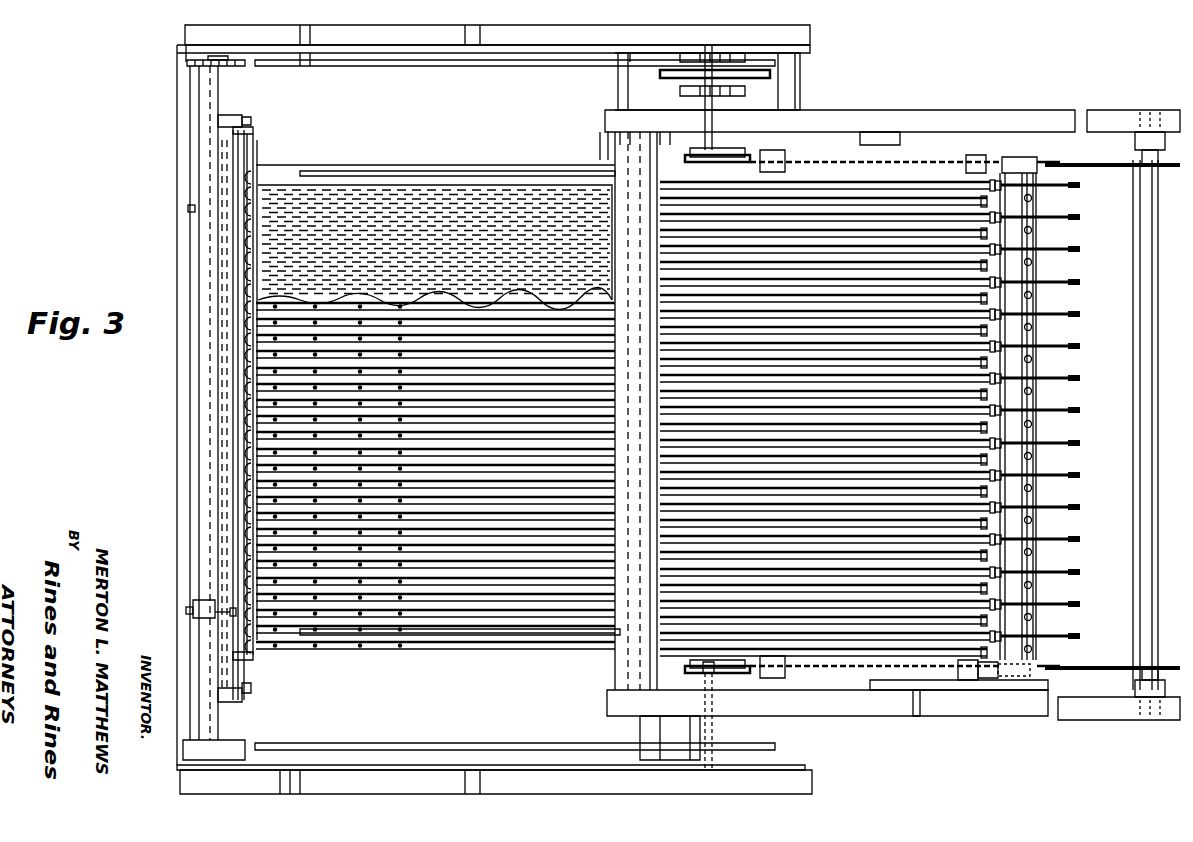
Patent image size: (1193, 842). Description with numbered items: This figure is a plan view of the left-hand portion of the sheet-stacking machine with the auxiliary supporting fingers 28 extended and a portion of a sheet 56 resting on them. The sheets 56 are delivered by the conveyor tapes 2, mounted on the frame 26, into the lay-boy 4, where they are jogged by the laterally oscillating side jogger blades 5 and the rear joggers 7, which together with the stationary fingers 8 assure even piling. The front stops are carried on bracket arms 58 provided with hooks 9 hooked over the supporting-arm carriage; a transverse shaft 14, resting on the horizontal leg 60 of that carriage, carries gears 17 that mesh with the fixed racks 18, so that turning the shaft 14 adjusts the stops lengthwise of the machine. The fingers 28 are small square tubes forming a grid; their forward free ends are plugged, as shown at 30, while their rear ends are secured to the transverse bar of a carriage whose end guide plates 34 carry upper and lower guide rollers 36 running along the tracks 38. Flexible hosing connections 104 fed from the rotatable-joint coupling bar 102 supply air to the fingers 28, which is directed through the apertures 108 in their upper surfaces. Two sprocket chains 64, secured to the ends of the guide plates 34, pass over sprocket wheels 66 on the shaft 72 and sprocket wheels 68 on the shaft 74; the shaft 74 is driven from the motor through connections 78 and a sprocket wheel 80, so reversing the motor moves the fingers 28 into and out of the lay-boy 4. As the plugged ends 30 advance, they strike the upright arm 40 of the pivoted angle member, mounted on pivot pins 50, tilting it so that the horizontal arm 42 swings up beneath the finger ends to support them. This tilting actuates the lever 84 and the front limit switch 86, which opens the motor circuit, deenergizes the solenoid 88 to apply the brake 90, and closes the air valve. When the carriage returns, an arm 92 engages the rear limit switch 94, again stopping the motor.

The gears 17 is at (190, 62).
The shaft 14 is at (210, 76).
The horizontal leg 60 is at (200, 95).
The pivot pins 50 is at (200, 118).
The lever 84 is at (232, 130).
The bracket arms 58 is at (232, 115).
The front limit switch 86 is at (250, 120).
The horizontally disposed arm 42 is at (252, 140).
The upright arm 40 is at (258, 142).
The racks 18 is at (368, 62).
The hooks 9 is at (198, 210).
The side jogger blades 5 is at (476, 172).
The sheets 56 is at (530, 200).
The shaft 74 is at (705, 130).
The solenoid 88 is at (660, 62).
The connections 78 is at (685, 90).
The brake 90 is at (745, 58).
The sprocket wheel 80 is at (770, 75).
The sprocket wheels 68 is at (735, 150).
The sprocket chains 64 is at (835, 160).
The frame 26 is at (912, 110).
The guide rollers 36 is at (975, 155).
The tracks 38 is at (1020, 157).
The rear limit switch 94 is at (1145, 135).
The sprocket wheels 66 is at (1120, 170).
The guide plates 34 is at (1035, 190).
The arm 92 is at (1085, 178).
The rotatable-joint coupling bar 102 is at (1035, 327).
The supporting fingers 28 is at (250, 388).
The shaft 72 is at (1135, 446).
The flexible hosing connections 104 is at (1060, 572).
The plugged ends 30 is at (250, 485).
The conveyor tapes 2 is at (262, 552).
The apertures 108 is at (340, 640).
The lay-boy 4 is at (374, 709).
The stationary fingers 8 is at (615, 570).
The rear joggers 7 is at (615, 587).